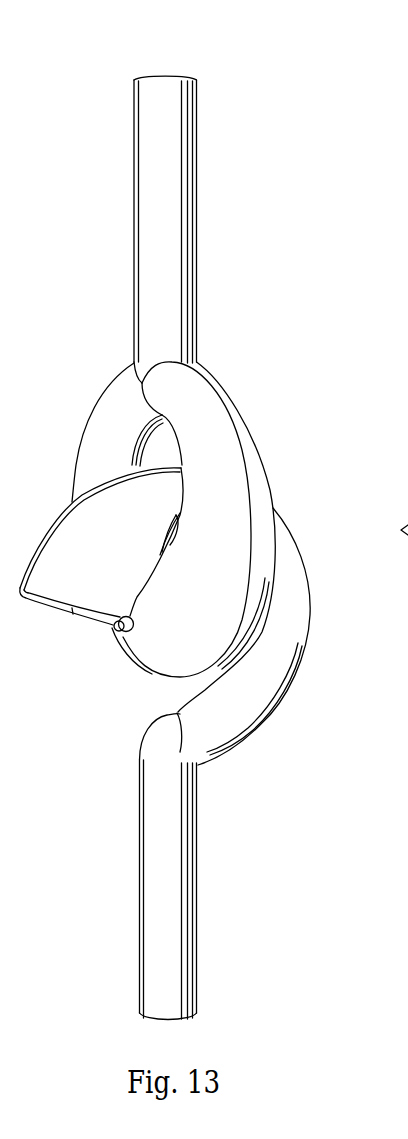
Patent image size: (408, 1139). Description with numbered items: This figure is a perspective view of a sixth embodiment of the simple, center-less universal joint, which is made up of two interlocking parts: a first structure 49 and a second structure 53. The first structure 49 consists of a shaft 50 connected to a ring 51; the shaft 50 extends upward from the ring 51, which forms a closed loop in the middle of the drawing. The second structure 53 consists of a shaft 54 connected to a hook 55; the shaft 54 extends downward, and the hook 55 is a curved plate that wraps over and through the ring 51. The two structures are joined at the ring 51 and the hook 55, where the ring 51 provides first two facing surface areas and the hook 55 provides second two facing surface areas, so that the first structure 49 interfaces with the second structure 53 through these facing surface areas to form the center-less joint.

The first structure 49 is at (287, 328).
The shaft 50 is at (168, 194).
The ring 51 is at (209, 598).
The second structure 53 is at (289, 800).
The shaft 54 is at (167, 915).
The hook 55 is at (119, 557).